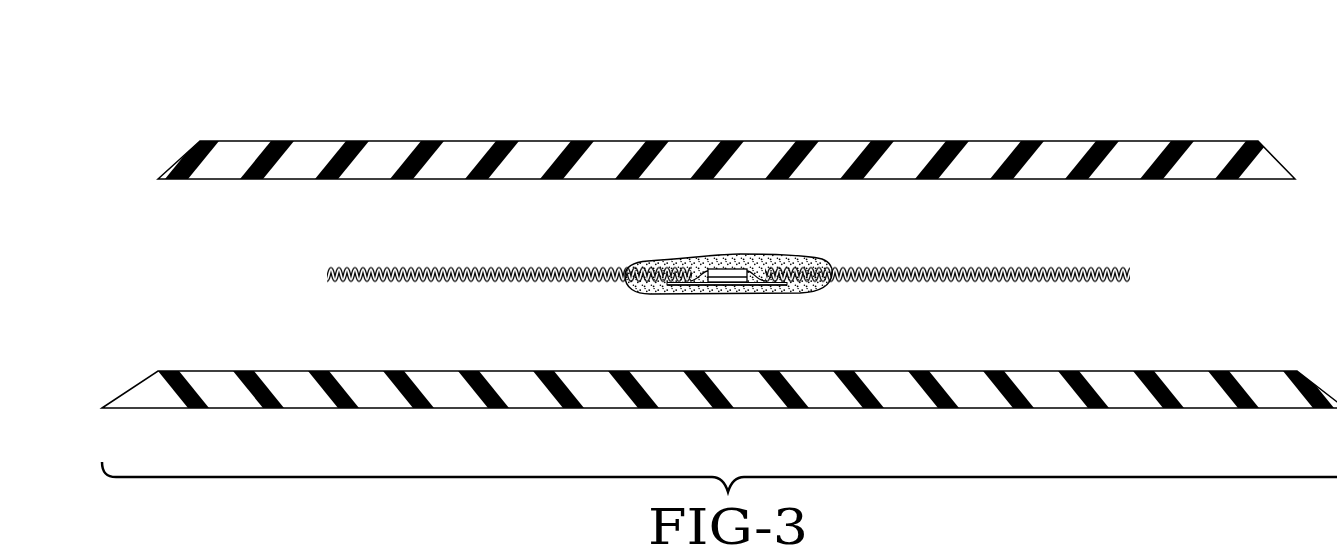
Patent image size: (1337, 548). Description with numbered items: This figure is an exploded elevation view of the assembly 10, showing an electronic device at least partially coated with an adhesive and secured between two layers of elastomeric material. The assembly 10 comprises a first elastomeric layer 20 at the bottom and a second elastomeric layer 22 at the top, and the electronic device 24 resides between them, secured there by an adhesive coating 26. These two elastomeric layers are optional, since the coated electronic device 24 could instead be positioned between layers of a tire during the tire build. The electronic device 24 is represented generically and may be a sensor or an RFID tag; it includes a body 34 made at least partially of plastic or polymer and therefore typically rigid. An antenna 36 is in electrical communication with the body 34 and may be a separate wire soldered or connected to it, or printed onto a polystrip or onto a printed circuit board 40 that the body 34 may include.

The assembly 10 is at (155, 117).
The first elastomeric layer 20 is at (1247, 371).
The second elastomeric layer 22 is at (1208, 141).
The electronic device 24 is at (685, 266).
The adhesive coating 26 is at (729, 256).
The body 34 is at (740, 285).
The antenna 36 is at (950, 268).
The printed circuit board 40 is at (680, 287).